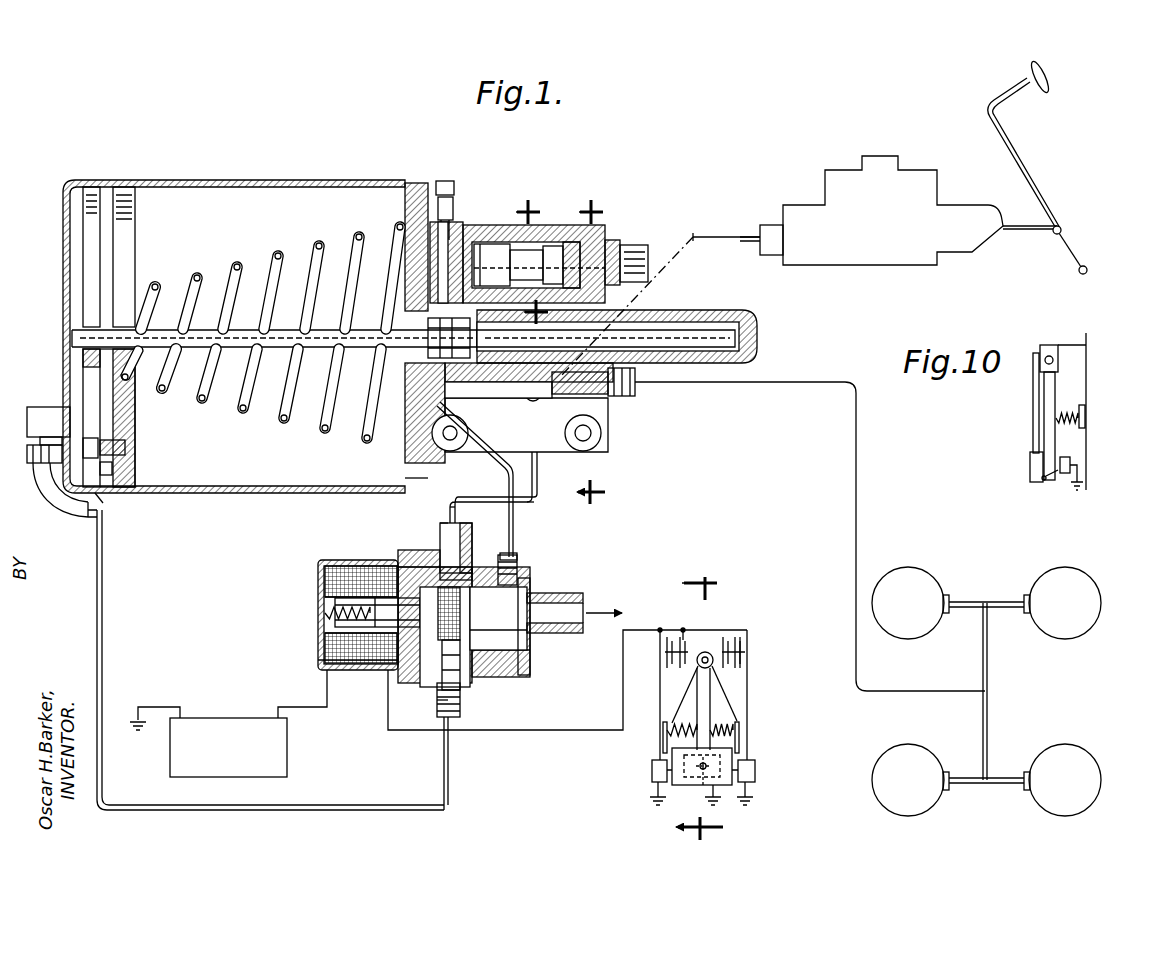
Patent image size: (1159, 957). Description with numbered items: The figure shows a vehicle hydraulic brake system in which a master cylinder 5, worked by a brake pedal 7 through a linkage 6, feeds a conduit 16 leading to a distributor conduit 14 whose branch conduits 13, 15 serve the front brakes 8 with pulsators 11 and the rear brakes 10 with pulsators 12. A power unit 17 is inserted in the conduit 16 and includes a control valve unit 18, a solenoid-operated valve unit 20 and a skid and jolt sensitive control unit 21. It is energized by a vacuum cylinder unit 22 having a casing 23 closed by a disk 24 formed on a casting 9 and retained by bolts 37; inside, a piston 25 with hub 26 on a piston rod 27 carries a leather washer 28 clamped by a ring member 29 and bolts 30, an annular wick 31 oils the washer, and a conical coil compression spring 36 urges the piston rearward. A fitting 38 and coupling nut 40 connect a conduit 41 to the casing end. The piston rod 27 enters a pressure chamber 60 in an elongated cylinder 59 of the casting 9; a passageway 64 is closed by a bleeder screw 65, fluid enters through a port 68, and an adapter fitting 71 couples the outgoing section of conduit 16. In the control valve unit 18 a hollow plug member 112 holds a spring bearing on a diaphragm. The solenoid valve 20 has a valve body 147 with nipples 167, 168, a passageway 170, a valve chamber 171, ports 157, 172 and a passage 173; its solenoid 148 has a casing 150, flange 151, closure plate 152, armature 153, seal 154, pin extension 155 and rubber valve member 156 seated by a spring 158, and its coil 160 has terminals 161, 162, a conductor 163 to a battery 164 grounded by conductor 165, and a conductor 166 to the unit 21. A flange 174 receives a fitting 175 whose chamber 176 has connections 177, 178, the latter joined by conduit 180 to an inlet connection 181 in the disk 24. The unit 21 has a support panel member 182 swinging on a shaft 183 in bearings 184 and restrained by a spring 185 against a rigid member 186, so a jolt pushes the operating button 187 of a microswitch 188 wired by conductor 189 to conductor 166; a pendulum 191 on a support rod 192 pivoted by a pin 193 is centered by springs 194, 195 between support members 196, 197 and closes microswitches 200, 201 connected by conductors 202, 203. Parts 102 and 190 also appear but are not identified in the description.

In FIG. 1, the master cylinder 5 is at (842, 167).
In FIG. 1, the linkage 6 is at (1018, 242).
In FIG. 1, the brake pedal 7 is at (1048, 87).
In FIG. 1, the front brakes 8 is at (908, 567).
In FIG. 1, the casting 9 is at (560, 453).
In FIG. 1, the rear brakes 10 is at (912, 813).
In FIG. 1, the fluid operated pulsators 11 is at (948, 600).
In FIG. 1, the fluid operated pulsators 12 is at (947, 772).
In FIG. 1, the branch conduit 13 is at (976, 600).
In FIG. 1, the distributor conduit 14 is at (988, 668).
In FIG. 1, the branch conduit 15 is at (970, 784).
In FIG. 1, the conduit 16 is at (693, 236).
In FIG. 1, the power unit 17 is at (550, 458).
In FIG. 1, the control valve unit 18 is at (562, 223).
In FIG. 1, the solenoid-operated valve unit 20 is at (442, 633).
In FIG. 1, the skid and jolt sensitive control unit 21 is at (699, 705).
In FIG. 1, the vacuum cylinder unit 22 is at (206, 312).
In FIG. 1, the casing 23 is at (62, 234).
In FIG. 1, the disk 24 is at (417, 182).
In FIG. 1, the piston 25 is at (137, 224).
In FIG. 1, the hub 26 is at (85, 355).
In FIG. 1, the piston rod 27 is at (212, 284).
In FIG. 1, the leather washer 28 is at (104, 497).
In FIG. 1, the ring member 29 is at (75, 473).
In FIG. 1, the bolts 30 is at (115, 450).
In FIG. 1, the annular wick 31 is at (120, 472).
In FIG. 1, the conical coil compression spring 36 is at (318, 254).
In FIG. 1, the bolts 37 is at (420, 490).
In FIG. 1, the fitting 38 is at (33, 407).
In FIG. 1, the coupling nut 40 is at (28, 452).
In FIG. 1, the conduit 41 is at (539, 462).
In FIG. 1, the elongated cylinder 59 is at (705, 318).
In FIG. 1, the pressure chamber 60 is at (738, 337).
In FIG. 1, the passageway 64 is at (448, 240).
In FIG. 1, the bleeder screw 65 is at (450, 185).
In FIG. 1, the inlet port 68 is at (516, 418).
In FIG. 1, the adapter fitting 71 is at (622, 397).
In FIG. 10, the bar 102 is at (1033, 380).
In FIG. 1, the hollow plug member 112 is at (640, 250).
In FIG. 1, the valve body 147 is at (512, 508).
In FIG. 1, the solenoid 148 is at (328, 560).
In FIG. 1, the solenoid casing 150 is at (318, 578).
In FIG. 1, the circumferential flange 151 is at (392, 553).
In FIG. 1, the closure plate 152 is at (396, 552).
In FIG. 1, the armature 153 is at (335, 660).
In FIG. 1, the seal 154 is at (372, 660).
In FIG. 1, the pin extension 155 is at (460, 662).
In FIG. 1, the rubber valve member 156 is at (465, 613).
In FIG. 1, the valve port 157 is at (460, 632).
In FIG. 1, the coil compression spring 158 is at (325, 613).
In FIG. 1, the coil 160 is at (322, 640).
In FIG. 1, the terminal 161 is at (318, 660).
In FIG. 1, the ground terminal 162 is at (378, 683).
In FIG. 1, the conductor 163 is at (322, 710).
In FIG. 1, the battery 164 is at (288, 773).
In FIG. 1, the conductor 165 is at (158, 706).
In FIG. 1, the conductor 166 is at (530, 732).
In FIG. 1, the nipple 167 is at (437, 702).
In FIG. 1, the nipple 168 is at (454, 512).
In FIG. 1, the passageway 170 is at (460, 700).
In FIG. 1, the valve chamber 171 is at (511, 553).
In FIG. 1, the port 172 is at (420, 606).
In FIG. 1, the passage 173 is at (432, 522).
In FIG. 1, the circumferential flange 174 is at (478, 645).
In FIG. 1, the fitting 175 is at (531, 586).
In FIG. 1, the chamber 176 is at (510, 642).
In FIG. 1, the connection 177 is at (576, 594).
In FIG. 1, the connection 178 is at (516, 565).
In FIG. 1, the conduit 180 is at (472, 425).
In FIG. 1, the inlet connection 181 is at (455, 398).
In FIG. 1, the support panel member 182 is at (722, 700).
In FIG. 10, the support panel member 182 is at (1053, 388).
In FIG. 1, the shaft 183 is at (741, 656).
In FIG. 10, the shaft 183 is at (1049, 345).
In FIG. 1, the bearings 184 is at (670, 640).
In FIG. 10, the spring 185 is at (1058, 418).
In FIG. 10, the rigid member 186 is at (1083, 410).
In FIG. 10, the operating button 187 is at (1042, 479).
In FIG. 10, the microswitch 188 is at (1065, 474).
In FIG. 1, the conductor 189 is at (667, 708).
In FIG. 10, the support 190 is at (1087, 366).
In FIG. 1, the pendulum 191 is at (680, 787).
In FIG. 10, the pendulum 191 is at (1030, 462).
In FIG. 1, the support rod 192 is at (714, 684).
In FIG. 1, the pin 193 is at (708, 655).
In FIG. 1, the centering spring 194 is at (667, 730).
In FIG. 1, the centering spring 195 is at (736, 726).
In FIG. 1, the upstanding support member 196 is at (663, 748).
In FIG. 1, the upstanding support member 197 is at (740, 740).
In FIG. 1, the microswitch 200 is at (757, 766).
In FIG. 1, the microswitch 201 is at (652, 776).
In FIG. 1, the conductor 202 is at (748, 695).
In FIG. 1, the conductor 203 is at (660, 690).